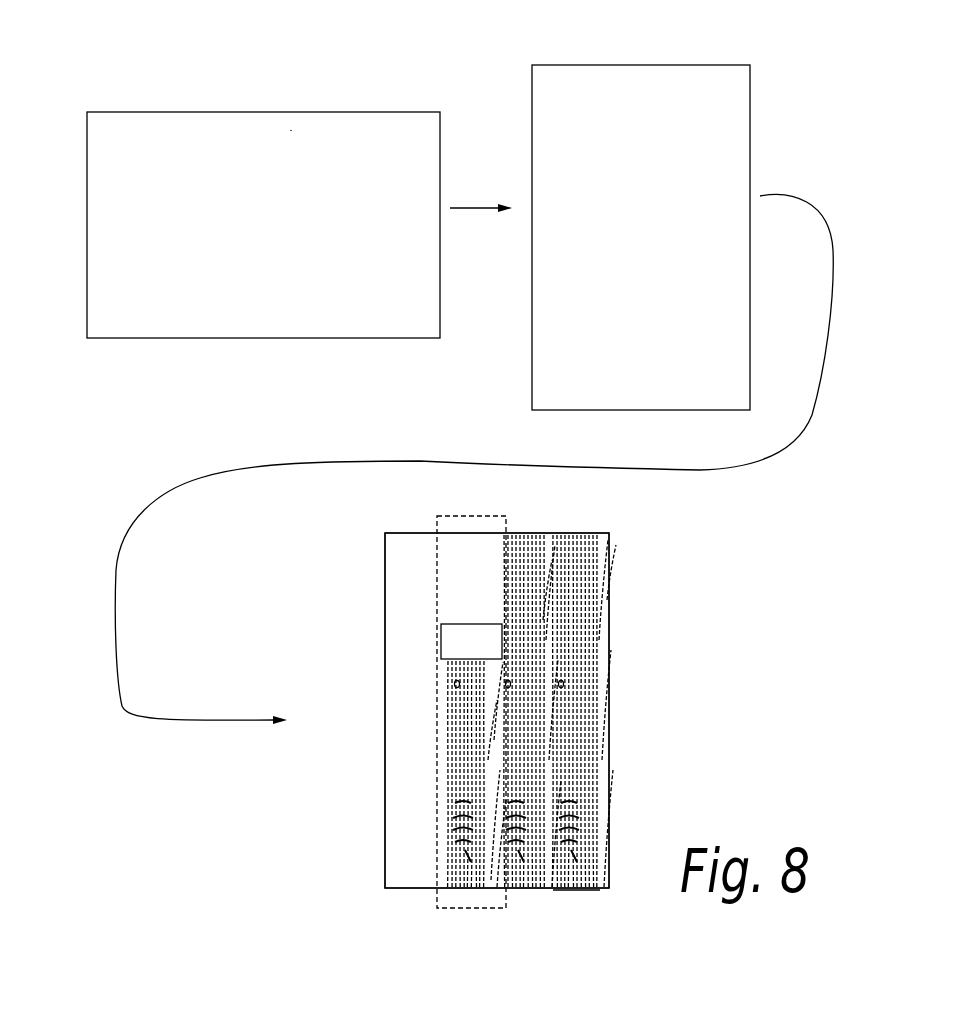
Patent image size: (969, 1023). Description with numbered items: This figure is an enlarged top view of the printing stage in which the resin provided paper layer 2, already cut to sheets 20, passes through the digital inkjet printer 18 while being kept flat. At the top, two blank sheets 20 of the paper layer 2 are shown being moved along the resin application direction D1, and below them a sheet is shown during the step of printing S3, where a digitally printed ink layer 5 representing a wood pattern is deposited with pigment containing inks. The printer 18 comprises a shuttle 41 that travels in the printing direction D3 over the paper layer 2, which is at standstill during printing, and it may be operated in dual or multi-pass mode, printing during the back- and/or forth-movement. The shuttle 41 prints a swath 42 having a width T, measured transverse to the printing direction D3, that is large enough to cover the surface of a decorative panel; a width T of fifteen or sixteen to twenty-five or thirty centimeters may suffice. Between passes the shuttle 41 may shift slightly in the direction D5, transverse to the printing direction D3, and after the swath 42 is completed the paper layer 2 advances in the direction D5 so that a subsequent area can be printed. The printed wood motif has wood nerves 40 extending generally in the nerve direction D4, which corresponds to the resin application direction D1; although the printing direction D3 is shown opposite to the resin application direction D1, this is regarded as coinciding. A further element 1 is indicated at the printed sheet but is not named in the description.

The panel 1 is at (610, 558).
The resin provided paper layer 2 is at (208, 128).
The digitally printed ink layer 5 is at (590, 580).
The digital inkjet printer 18 is at (477, 516).
The sheets 20 is at (291, 130).
The wood nerves 40 is at (450, 767).
The shuttle 41 is at (441, 641).
The swath 42 is at (553, 892).
The resin application direction D1 is at (290, 375).
The printing direction D3 is at (472, 635).
The nerve direction D4 is at (658, 677).
The transverse direction D5 is at (660, 803).
The step of printing S3 is at (426, 664).
The width T is at (653, 505).